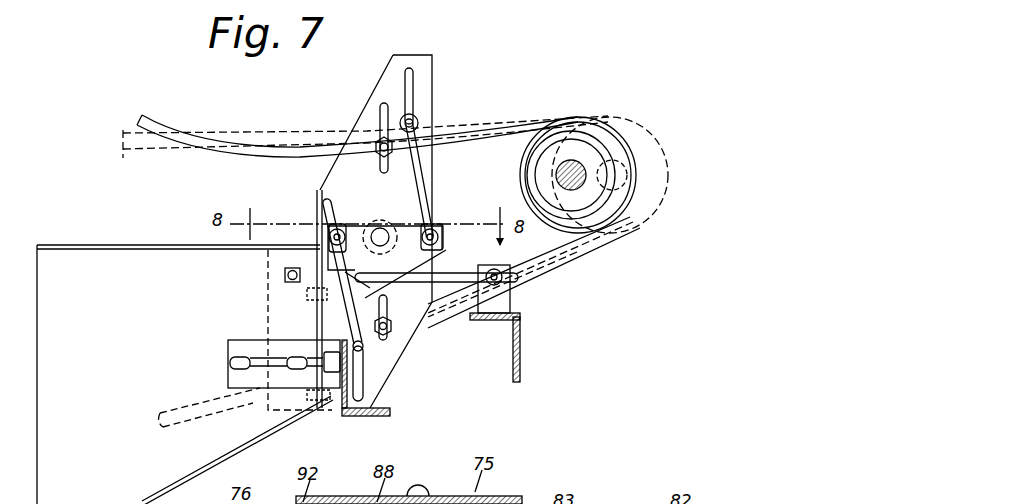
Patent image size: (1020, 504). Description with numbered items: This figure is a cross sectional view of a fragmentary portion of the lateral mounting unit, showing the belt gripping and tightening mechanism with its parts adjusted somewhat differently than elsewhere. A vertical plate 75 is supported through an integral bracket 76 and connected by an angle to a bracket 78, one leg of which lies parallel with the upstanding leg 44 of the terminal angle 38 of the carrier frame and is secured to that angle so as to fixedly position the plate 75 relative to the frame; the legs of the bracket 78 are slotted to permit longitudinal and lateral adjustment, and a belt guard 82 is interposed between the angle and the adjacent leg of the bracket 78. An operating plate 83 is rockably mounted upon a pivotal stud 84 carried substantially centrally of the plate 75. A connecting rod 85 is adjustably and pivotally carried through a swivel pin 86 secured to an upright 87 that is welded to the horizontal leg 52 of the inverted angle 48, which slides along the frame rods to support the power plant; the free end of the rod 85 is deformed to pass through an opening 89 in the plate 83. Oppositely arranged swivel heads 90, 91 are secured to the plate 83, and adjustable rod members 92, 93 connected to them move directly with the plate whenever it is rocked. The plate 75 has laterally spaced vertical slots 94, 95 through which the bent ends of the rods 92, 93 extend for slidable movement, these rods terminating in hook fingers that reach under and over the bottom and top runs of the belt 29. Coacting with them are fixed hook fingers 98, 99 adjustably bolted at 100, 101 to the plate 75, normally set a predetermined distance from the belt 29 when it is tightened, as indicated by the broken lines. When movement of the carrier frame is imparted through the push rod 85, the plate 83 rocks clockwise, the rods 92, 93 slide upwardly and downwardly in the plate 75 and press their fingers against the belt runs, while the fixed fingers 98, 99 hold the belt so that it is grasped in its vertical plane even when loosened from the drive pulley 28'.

The drive pulley 28' is at (621, 161).
The belt 29 is at (155, 127).
The terminal angle 38 is at (375, 414).
The upstanding leg 44 is at (341, 398).
The inverted angle 48 is at (520, 367).
The horizontal leg 52 is at (485, 320).
The vertical plate 75 is at (436, 90).
The integral bracket 76 is at (318, 240).
The bracket 78 is at (243, 343).
The belt guard 82 is at (132, 377).
The operating plate 83 is at (353, 228).
The pivotal stud 84 is at (382, 230).
The connecting rod 85 is at (450, 277).
The swivel pin 86 is at (497, 287).
The upright 87 is at (519, 320).
The opening 89 is at (343, 262).
The swivel head 90 is at (326, 230).
The swivel head 91 is at (436, 230).
The rod member 92 is at (347, 298).
The rod member 93 is at (418, 161).
The vertical slot 94 is at (363, 382).
The vertical slot 95 is at (412, 76).
The fixed hook finger 98 is at (394, 330).
The fixed hook finger 99 is at (378, 150).
The bolt 100 is at (403, 352).
The bolt 101 is at (379, 140).